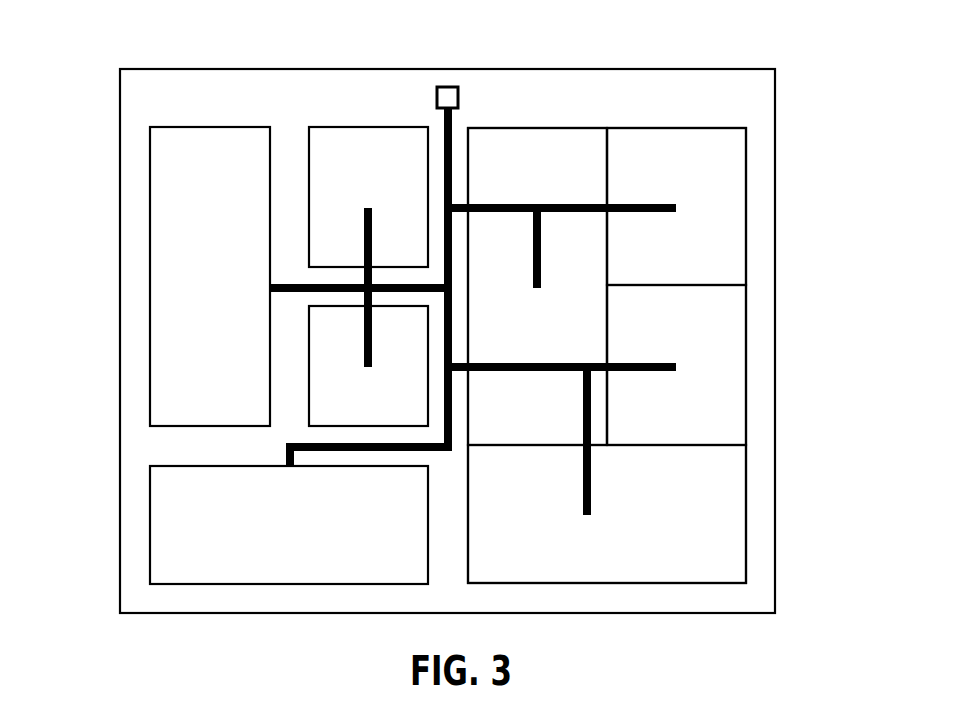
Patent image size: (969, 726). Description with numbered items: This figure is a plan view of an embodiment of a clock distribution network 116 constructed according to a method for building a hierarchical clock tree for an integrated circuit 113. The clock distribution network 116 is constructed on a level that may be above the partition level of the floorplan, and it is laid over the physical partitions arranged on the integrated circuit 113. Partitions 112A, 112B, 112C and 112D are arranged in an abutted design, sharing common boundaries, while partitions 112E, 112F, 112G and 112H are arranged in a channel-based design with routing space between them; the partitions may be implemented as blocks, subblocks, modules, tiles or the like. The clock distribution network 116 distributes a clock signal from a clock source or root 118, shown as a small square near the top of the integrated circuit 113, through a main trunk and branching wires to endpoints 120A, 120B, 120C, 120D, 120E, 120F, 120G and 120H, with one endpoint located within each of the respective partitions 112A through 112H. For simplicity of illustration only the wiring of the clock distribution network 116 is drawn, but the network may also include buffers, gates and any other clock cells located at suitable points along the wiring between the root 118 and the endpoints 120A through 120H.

The integrated circuit 113 is at (777, 237).
The clock distribution network 116 is at (455, 127).
The clock source or root 118 is at (447, 86).
The partition 112A is at (506, 177).
The partition 112B is at (646, 178).
The partition 112C is at (646, 327).
The partition 112D is at (626, 490).
The partition 112E is at (187, 508).
The partition 112F is at (338, 413).
The partition 112G is at (179, 177).
The partition 112H is at (338, 177).
The endpoint 120A is at (541, 292).
The endpoint 120B is at (677, 219).
The endpoint 120C is at (676, 377).
The endpoint 120D is at (589, 520).
The endpoint 120E is at (292, 473).
The endpoint 120F is at (356, 366).
The endpoint 120G is at (266, 288).
The endpoint 120H is at (356, 210).